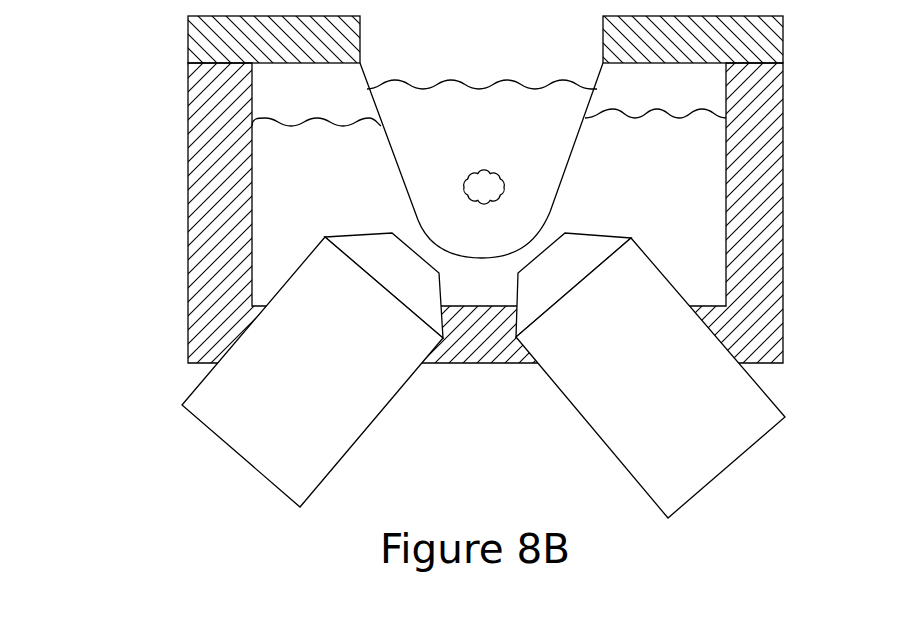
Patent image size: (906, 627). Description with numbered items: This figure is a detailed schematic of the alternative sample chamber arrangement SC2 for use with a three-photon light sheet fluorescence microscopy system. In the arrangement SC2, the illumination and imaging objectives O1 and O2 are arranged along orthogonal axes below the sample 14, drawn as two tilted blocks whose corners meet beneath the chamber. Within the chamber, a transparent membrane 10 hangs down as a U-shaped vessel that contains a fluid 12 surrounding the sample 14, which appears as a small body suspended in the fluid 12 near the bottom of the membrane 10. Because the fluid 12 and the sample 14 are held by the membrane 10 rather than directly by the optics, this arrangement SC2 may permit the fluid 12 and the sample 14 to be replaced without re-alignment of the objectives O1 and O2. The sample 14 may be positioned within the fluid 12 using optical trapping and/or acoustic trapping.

The transparent membrane 10 is at (565, 177).
The fluid 12 is at (515, 115).
The sample 14 is at (480, 170).
The alternative sample chamber arrangement SC2 is at (153, 209).
The objective O1 is at (312, 370).
The objective O2 is at (650, 375).